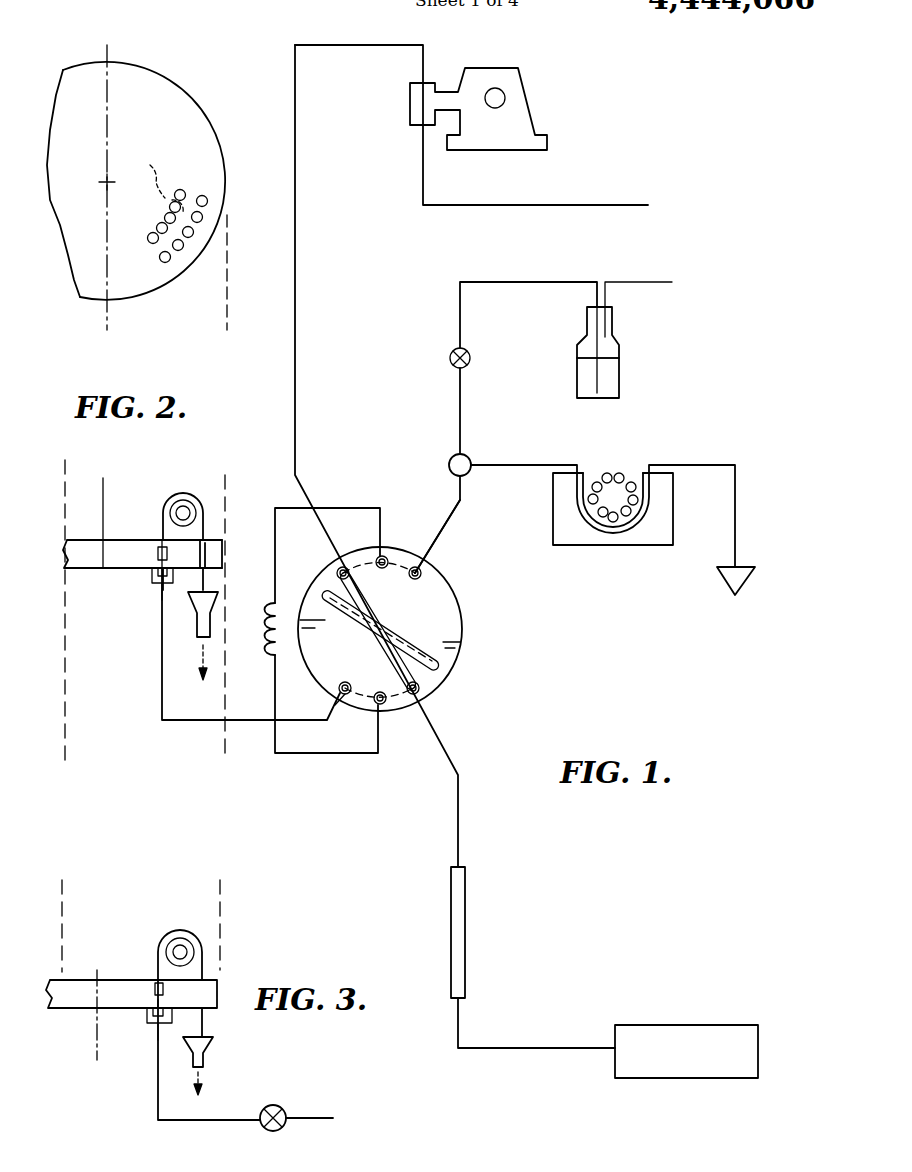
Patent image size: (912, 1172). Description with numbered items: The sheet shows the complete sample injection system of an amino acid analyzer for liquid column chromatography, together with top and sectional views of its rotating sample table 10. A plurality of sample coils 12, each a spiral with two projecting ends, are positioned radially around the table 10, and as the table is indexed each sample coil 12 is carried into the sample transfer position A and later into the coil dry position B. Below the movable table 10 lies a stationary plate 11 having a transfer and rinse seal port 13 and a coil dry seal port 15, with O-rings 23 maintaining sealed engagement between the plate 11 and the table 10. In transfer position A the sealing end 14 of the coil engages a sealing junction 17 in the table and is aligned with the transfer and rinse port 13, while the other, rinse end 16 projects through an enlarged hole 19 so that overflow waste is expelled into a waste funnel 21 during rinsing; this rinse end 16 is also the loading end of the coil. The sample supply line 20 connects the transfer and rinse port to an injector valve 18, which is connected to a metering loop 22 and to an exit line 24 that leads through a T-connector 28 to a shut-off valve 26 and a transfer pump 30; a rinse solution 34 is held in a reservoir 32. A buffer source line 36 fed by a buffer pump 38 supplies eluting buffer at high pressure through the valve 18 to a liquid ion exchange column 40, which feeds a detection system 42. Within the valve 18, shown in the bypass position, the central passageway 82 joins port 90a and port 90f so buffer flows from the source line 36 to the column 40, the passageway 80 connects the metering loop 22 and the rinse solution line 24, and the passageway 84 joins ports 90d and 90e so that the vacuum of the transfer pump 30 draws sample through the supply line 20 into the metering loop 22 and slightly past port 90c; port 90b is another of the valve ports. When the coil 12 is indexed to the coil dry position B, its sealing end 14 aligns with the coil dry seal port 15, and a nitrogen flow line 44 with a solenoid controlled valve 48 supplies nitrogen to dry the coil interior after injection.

In FIG. 2, the rotating sample table 10 is at (173, 78).
In FIG. 1, the rotating sample table 10 is at (80, 568).
In FIG. 3, the rotating sample table 10 is at (68, 1013).
In FIG. 2, the stationary plate 11 is at (150, 169).
In FIG. 1, the stationary plate 11 is at (157, 590).
In FIG. 3, the stationary plate 11 is at (145, 1013).
In FIG. 1, the sample coil 12 is at (185, 492).
In FIG. 3, the sample coil 12 is at (192, 930).
In FIG. 2, the transfer and rinse seal port 13 is at (178, 194).
In FIG. 1, the transfer and rinse seal port 13 is at (157, 568).
In FIG. 1, the sealing end 14 is at (160, 530).
In FIG. 3, the sealing end 14 is at (157, 955).
In FIG. 2, the coil dry seal port 15 is at (162, 214).
In FIG. 3, the coil dry seal port 15 is at (155, 1005).
In FIG. 1, the rinse end 16 is at (205, 530).
In FIG. 3, the rinse end 16 is at (203, 968).
In FIG. 1, the sealing junction 17 is at (157, 548).
In FIG. 3, the sealing junction 17 is at (155, 990).
In FIG. 1, the injector valve 18 is at (456, 576).
In FIG. 1, the enlarged hole 19 is at (222, 555).
In FIG. 1, the sample supply line 20 is at (183, 720).
In FIG. 1, the waste funnel 21 is at (197, 620).
In FIG. 1, the metering loop 22 is at (263, 620).
In FIG. 1, the O-rings 23 is at (157, 572).
In FIG. 3, the O-rings 23 is at (167, 1030).
In FIG. 1, the exit line 24 is at (452, 505).
In FIG. 1, the shut-off valve 26 is at (452, 358).
In FIG. 1, the T-connector 28 is at (455, 450).
In FIG. 1, the transfer pump 30 is at (622, 533).
In FIG. 1, the reservoir 32 is at (584, 330).
In FIG. 1, the rinse solution 34 is at (619, 375).
In FIG. 1, the buffer source line 36 is at (297, 245).
In FIG. 1, the buffer pump 38 is at (540, 102).
In FIG. 1, the liquid ion exchange column 40 is at (465, 910).
In FIG. 1, the detection system 42 is at (662, 1027).
In FIG. 3, the nitrogen flow line 44 is at (158, 1085).
In FIG. 3, the solenoid controlled valve 48 is at (278, 1107).
In FIG. 1, the passageway 80 is at (411, 572).
In FIG. 1, the central passageway 82 is at (388, 653).
In FIG. 1, the passageway 84 is at (358, 703).
In FIG. 1, the port 90a is at (343, 566).
In FIG. 1, the port 90b is at (386, 557).
In FIG. 1, the port 90c is at (425, 578).
In FIG. 1, the port 90d is at (338, 683).
In FIG. 1, the port 90e is at (383, 706).
In FIG. 1, the port 90f is at (421, 690).
In FIG. 2, the sample transfer position A is at (210, 220).
In FIG. 2, the coil dry position B is at (200, 237).